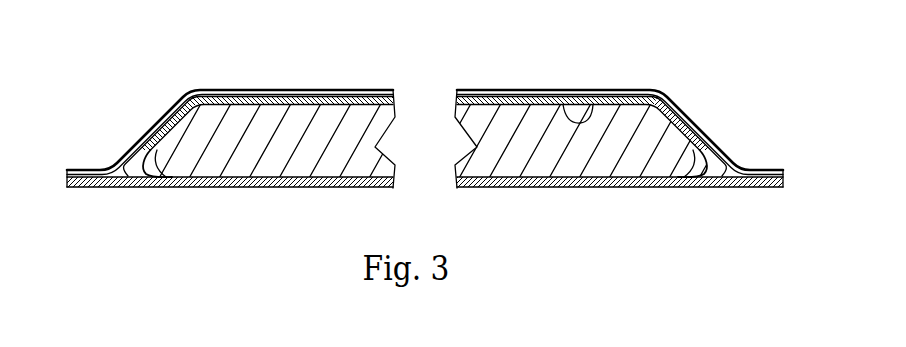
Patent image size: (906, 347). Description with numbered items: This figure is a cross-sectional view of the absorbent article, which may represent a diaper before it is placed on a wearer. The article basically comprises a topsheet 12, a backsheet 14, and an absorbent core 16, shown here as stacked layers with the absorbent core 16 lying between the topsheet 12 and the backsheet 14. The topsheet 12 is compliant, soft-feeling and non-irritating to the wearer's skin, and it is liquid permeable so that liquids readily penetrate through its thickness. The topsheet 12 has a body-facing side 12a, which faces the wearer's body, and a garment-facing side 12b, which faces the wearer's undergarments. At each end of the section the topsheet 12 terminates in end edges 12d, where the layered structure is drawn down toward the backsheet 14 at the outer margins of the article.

The topsheet 12 is at (300, 98).
The body-facing side 12a is at (530, 97).
The garment-facing side 12b is at (592, 104).
The end edges 12d is at (148, 146).
The backsheet 14 is at (187, 90).
The absorbent core 16 is at (652, 150).